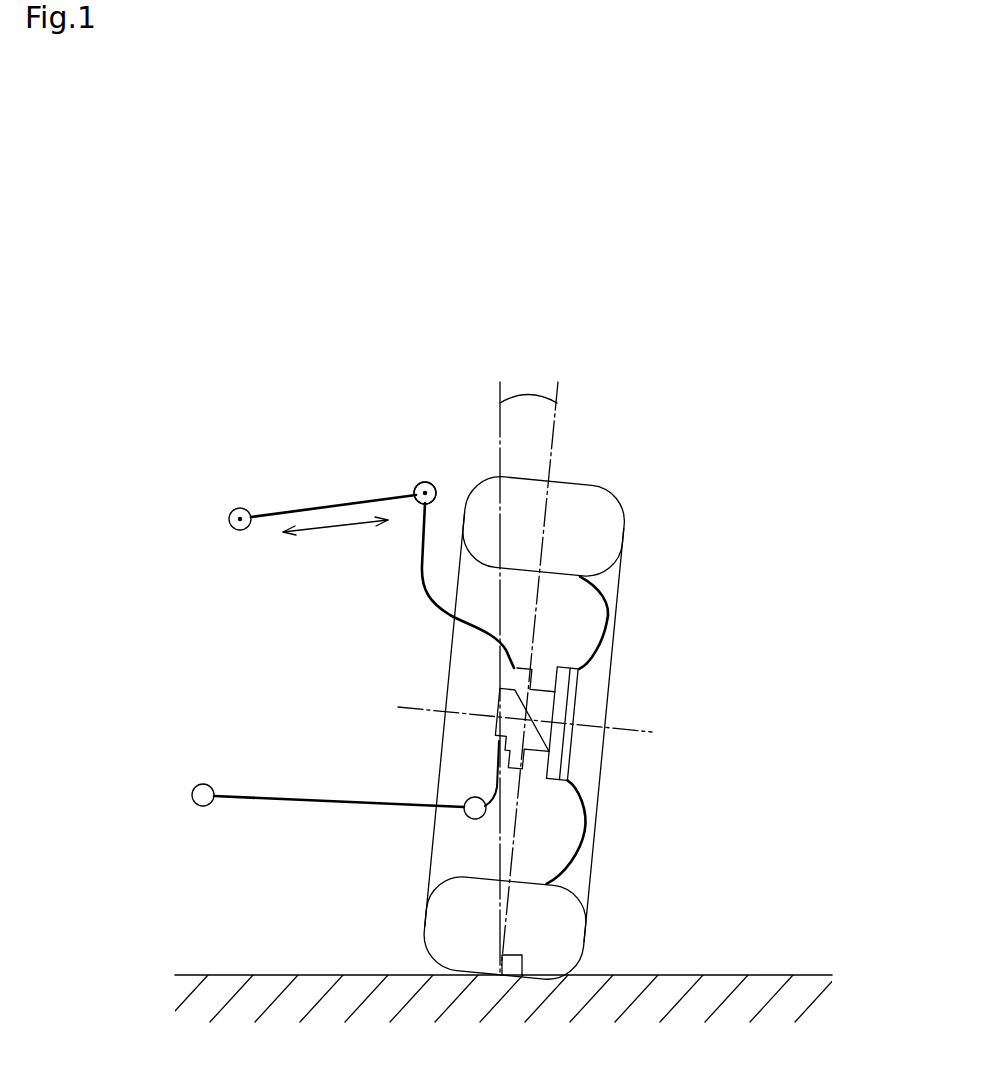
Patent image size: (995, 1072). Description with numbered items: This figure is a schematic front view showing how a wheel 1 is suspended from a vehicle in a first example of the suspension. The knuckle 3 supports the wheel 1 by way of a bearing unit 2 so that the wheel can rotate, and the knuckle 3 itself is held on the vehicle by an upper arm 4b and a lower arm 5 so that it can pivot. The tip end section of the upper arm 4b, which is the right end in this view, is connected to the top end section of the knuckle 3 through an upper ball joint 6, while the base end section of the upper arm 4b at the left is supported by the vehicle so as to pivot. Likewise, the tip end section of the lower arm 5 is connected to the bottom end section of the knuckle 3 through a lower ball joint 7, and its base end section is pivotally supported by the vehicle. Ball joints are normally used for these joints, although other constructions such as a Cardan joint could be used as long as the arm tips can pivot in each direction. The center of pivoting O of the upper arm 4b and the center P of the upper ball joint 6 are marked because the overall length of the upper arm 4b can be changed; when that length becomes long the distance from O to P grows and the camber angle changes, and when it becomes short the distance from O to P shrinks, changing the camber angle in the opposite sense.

The wheel 1 is at (600, 487).
The bearing unit 2 is at (542, 708).
The knuckle 3 is at (440, 598).
The upper arm 4b is at (322, 507).
The lower arm 5 is at (332, 803).
The upper ball joint 6 is at (430, 482).
The lower ball joint 7 is at (470, 798).
The center of pivoting of the upper arm O is at (233, 510).
The center of the upper ball joint P is at (415, 488).